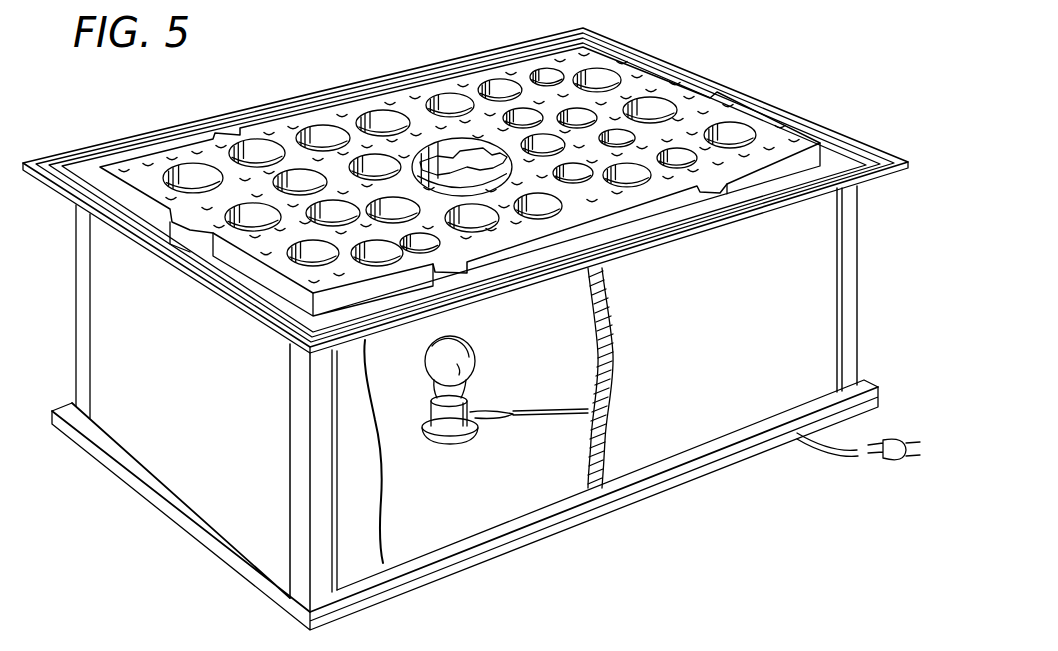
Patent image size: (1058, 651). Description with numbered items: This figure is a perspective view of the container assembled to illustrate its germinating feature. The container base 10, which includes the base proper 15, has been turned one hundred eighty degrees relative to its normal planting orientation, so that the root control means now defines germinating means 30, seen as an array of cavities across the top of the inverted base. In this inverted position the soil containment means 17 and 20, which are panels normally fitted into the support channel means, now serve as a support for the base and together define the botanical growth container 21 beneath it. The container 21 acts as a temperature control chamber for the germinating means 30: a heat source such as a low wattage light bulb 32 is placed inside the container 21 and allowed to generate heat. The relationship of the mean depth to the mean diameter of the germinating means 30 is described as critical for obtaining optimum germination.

The container base 10 is at (844, 130).
The base proper 15 is at (460, 181).
The soil containment means 17 is at (200, 367).
The soil containment means 20 is at (733, 361).
The botanical growth container 21 is at (198, 462).
The germinating means 30 is at (657, 100).
The light bulb 32 is at (472, 357).